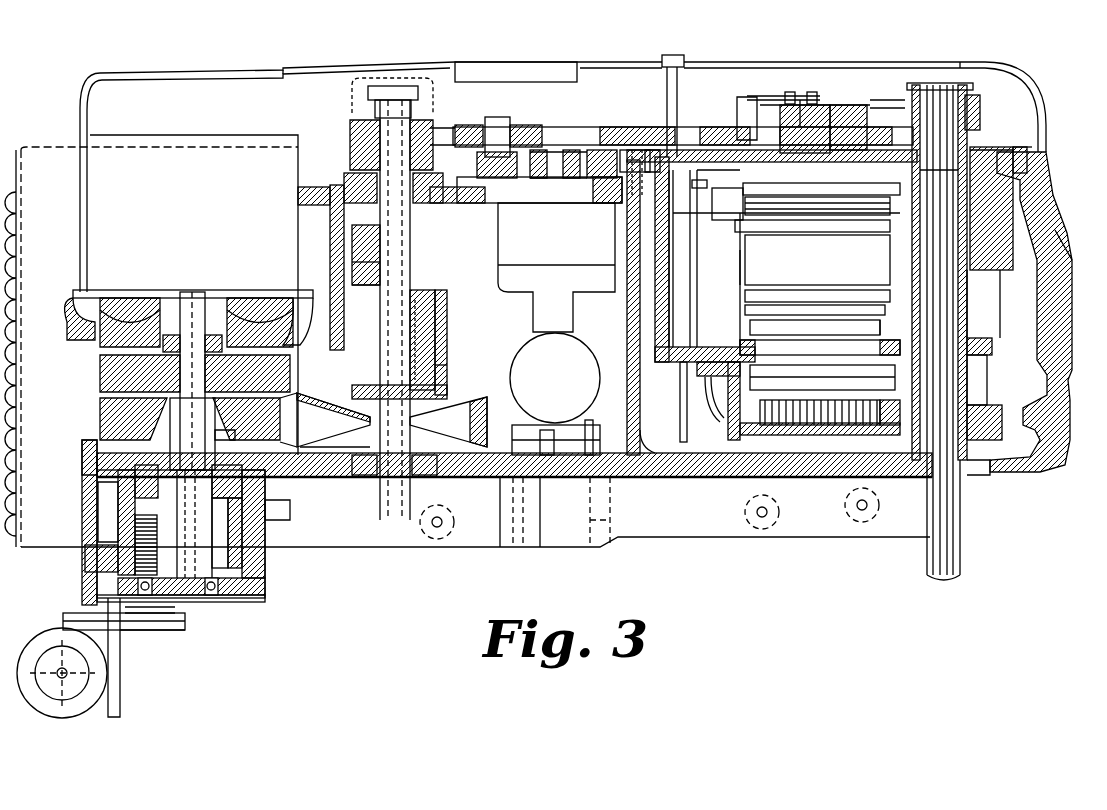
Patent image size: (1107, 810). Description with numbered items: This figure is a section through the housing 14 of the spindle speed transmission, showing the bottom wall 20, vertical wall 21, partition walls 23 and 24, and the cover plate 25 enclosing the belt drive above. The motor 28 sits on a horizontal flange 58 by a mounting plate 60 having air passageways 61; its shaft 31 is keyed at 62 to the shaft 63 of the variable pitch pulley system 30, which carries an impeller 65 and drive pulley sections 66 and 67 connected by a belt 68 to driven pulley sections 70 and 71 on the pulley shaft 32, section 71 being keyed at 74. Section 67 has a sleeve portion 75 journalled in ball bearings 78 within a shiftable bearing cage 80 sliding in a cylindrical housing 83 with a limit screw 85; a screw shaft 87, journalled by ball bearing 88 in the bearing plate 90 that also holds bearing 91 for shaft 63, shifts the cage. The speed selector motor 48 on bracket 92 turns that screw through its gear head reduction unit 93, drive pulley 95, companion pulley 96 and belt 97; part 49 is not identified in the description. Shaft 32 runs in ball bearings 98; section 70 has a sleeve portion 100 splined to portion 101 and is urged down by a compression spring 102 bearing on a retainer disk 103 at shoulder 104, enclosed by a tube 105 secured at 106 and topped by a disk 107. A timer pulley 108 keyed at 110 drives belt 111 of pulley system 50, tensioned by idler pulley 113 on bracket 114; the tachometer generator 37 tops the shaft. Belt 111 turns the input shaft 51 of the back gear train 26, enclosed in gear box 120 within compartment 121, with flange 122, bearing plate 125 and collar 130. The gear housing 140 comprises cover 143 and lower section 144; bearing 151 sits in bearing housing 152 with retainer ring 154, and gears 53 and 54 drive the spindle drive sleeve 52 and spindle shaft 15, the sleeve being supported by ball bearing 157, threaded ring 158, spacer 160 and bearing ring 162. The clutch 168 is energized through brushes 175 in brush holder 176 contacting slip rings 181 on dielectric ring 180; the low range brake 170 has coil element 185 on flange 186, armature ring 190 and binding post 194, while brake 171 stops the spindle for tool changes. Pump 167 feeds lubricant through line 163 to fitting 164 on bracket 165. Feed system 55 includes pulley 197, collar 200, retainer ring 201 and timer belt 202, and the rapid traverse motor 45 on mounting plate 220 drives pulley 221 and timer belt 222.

The housing 14 is at (1046, 170).
The spindle drive shaft 15 is at (962, 555).
The bottom wall 20 is at (608, 470).
The continuous vertical wall 21 is at (88, 460).
The partition wall 23 is at (655, 285).
The partition wall 24 is at (330, 220).
The cover plate 25 is at (1020, 72).
The back gear train 26 is at (935, 175).
The motor 28 is at (143, 150).
The variable pitch pulley system 30 is at (115, 423).
The motor shaft 31 is at (195, 292).
The pulley shaft 32 is at (410, 255).
The tachometer generator 37 is at (372, 82).
The rapid traverse motor 45 is at (556, 267).
The speed selector motor 48 is at (58, 702).
The bracket assembly 49 is at (192, 630).
The belt and pulley system 50 is at (612, 127).
The input shaft 51 is at (835, 138).
The spindle drive sleeve 52 is at (958, 222).
The gear 53 is at (765, 440).
The spindle drive sleeve gear 54 is at (1002, 415).
The spindle feed driving system 55 is at (860, 95).
The horizontal flange 58 is at (70, 330).
The mounting plate 60 is at (75, 305).
The air passageways 61 is at (120, 295).
The key 62 is at (178, 300).
The shaft 63 is at (180, 422).
The impeller 65 is at (110, 358).
The drive pulley section 66 is at (148, 400).
The drive pulley section 67 is at (260, 440).
The belt 68 is at (285, 405).
The driven pulley section 70 is at (332, 410).
The driven pulley section 71 is at (470, 445).
The key 74 is at (327, 445).
The sleeve portion 75 is at (245, 505).
The ball bearings 78 is at (230, 432).
The bearing cage 80 is at (150, 520).
The cylindrical housing 83 is at (268, 562).
The adjustable limit screw 85 is at (268, 580).
The screw shaft 87 is at (120, 520).
The ball bearing 88 is at (85, 590).
The bearing plate 90 is at (265, 596).
The ball bearing 91 is at (270, 533).
The bracket 92 is at (120, 695).
The gear head reduction unit 93 is at (40, 660).
The drive pulley 95 is at (70, 612).
The companion pulley 96 is at (185, 610).
The belt 97 is at (160, 625).
The ball bearings 98 is at (422, 200).
The sleeve portion 100 is at (430, 350).
The splined portion 101 is at (445, 368).
The compression spring 102 is at (440, 315).
The retainer disk 103 is at (360, 282).
The shoulder 104 is at (365, 260).
The tube 105 is at (445, 335).
The securing connection 106 is at (445, 387).
The disk 107 is at (352, 268).
The pulley 108 is at (352, 130).
The key 110 is at (370, 150).
The belt 111 is at (636, 150).
The idler pulley 113 is at (535, 127).
The bracket 114 is at (497, 193).
The gear box 120 is at (1012, 280).
The compartment 121 is at (655, 440).
The flange 122 is at (652, 158).
The bearing plate 125 is at (705, 157).
The collar 130 is at (810, 187).
The gear housing 140 is at (817, 260).
The upper section or cover 143 is at (890, 230).
The lower section 144 is at (752, 265).
The ball bearing 151 is at (835, 435).
The bearing housing 152 is at (730, 445).
The retainer ring 154 is at (800, 437).
The ball bearing 157 is at (992, 345).
The threaded ring 158 is at (985, 474).
The spacer 160 is at (978, 385).
The bearing ring 162 is at (1000, 150).
The lubricant line 163 is at (768, 95).
The fitting 164 is at (800, 95).
The bracket 165 is at (747, 112).
The motor driven pump 167 is at (555, 394).
The high range clutch 168 is at (895, 202).
The low range brake 170 is at (775, 334).
The spindle brake 171 is at (710, 393).
The brushes 175 is at (707, 184).
The brush holder 176 is at (712, 200).
The ring 180 is at (880, 215).
The slip rings 181 is at (855, 202).
The coil element 185 is at (775, 320).
The flange 186 is at (842, 342).
The armature ring 190 is at (758, 297).
The binding post 194 is at (885, 327).
The pulley 197 is at (980, 102).
The collar 200 is at (985, 150).
The threaded retainer ring 201 is at (960, 60).
The timer belt 202 is at (900, 100).
The mounting plate 220 is at (610, 185).
The timer type pulley 221 is at (575, 155).
The timer belt 222 is at (592, 170).